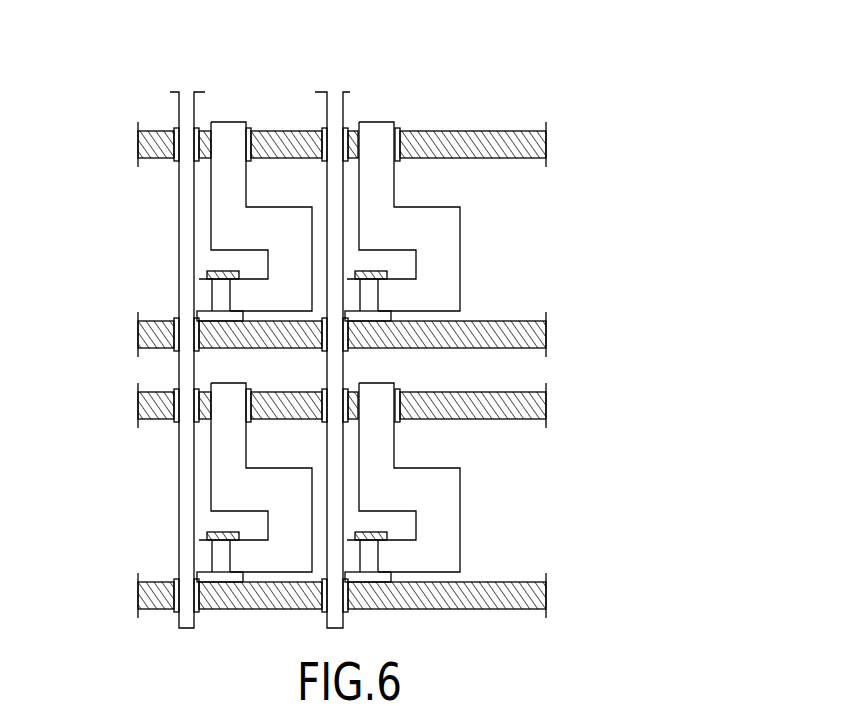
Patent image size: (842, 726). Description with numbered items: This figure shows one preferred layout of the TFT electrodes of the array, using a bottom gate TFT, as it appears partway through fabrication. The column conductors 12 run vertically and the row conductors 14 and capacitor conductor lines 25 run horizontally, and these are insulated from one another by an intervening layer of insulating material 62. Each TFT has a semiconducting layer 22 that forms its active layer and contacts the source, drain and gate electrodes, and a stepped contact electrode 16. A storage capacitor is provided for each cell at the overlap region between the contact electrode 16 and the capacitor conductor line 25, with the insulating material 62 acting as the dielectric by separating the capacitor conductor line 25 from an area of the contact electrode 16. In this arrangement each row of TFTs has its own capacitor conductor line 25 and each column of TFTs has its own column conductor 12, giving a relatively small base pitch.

The column conductor 12 is at (185, 108).
The insulating material 62 is at (347, 108).
The capacitor conductor line 25 is at (137, 144).
The row conductor 14 is at (137, 337).
The semiconducting layer 22 is at (225, 298).
The contact electrode 16 is at (435, 244).